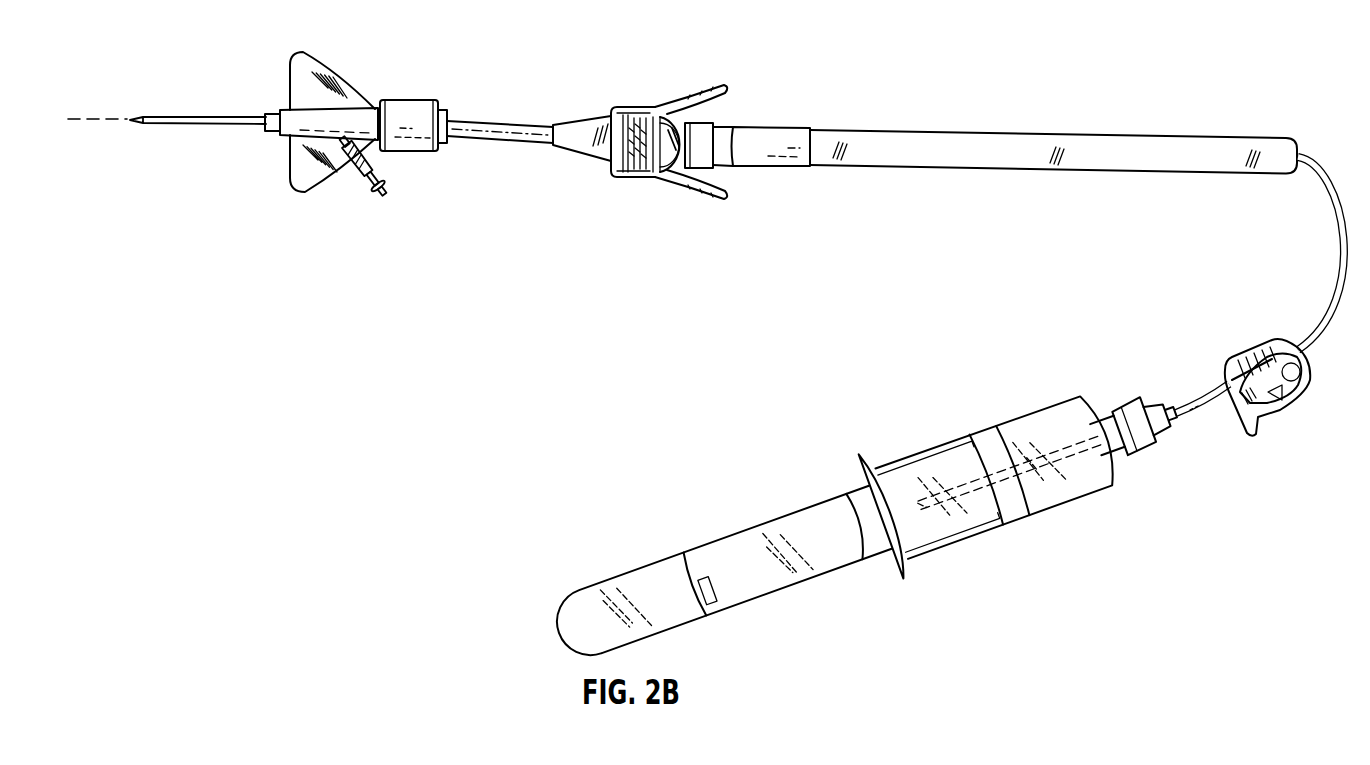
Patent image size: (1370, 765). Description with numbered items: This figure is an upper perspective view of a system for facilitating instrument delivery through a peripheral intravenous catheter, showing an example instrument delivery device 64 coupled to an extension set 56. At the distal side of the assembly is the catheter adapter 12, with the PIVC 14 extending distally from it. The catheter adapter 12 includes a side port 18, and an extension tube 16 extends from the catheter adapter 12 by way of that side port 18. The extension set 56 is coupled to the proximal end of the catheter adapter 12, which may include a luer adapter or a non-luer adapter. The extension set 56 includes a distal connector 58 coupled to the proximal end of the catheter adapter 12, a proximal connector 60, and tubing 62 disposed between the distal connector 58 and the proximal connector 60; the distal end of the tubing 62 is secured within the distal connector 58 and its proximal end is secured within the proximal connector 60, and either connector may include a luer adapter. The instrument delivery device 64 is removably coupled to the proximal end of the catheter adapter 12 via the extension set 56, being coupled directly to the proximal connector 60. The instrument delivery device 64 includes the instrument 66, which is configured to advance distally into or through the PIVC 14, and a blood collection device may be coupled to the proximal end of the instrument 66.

The catheter adapter 12 is at (343, 118).
The PIVC 14 is at (167, 116).
The extension tube 16 is at (382, 172).
The side port 18 is at (355, 156).
The extension set 56 is at (507, 152).
The distal connector 58 is at (403, 110).
The proximal connector 60 is at (578, 130).
The tubing 62 is at (497, 122).
The instrument delivery device 64 is at (1196, 125).
The instrument 66 is at (1323, 331).